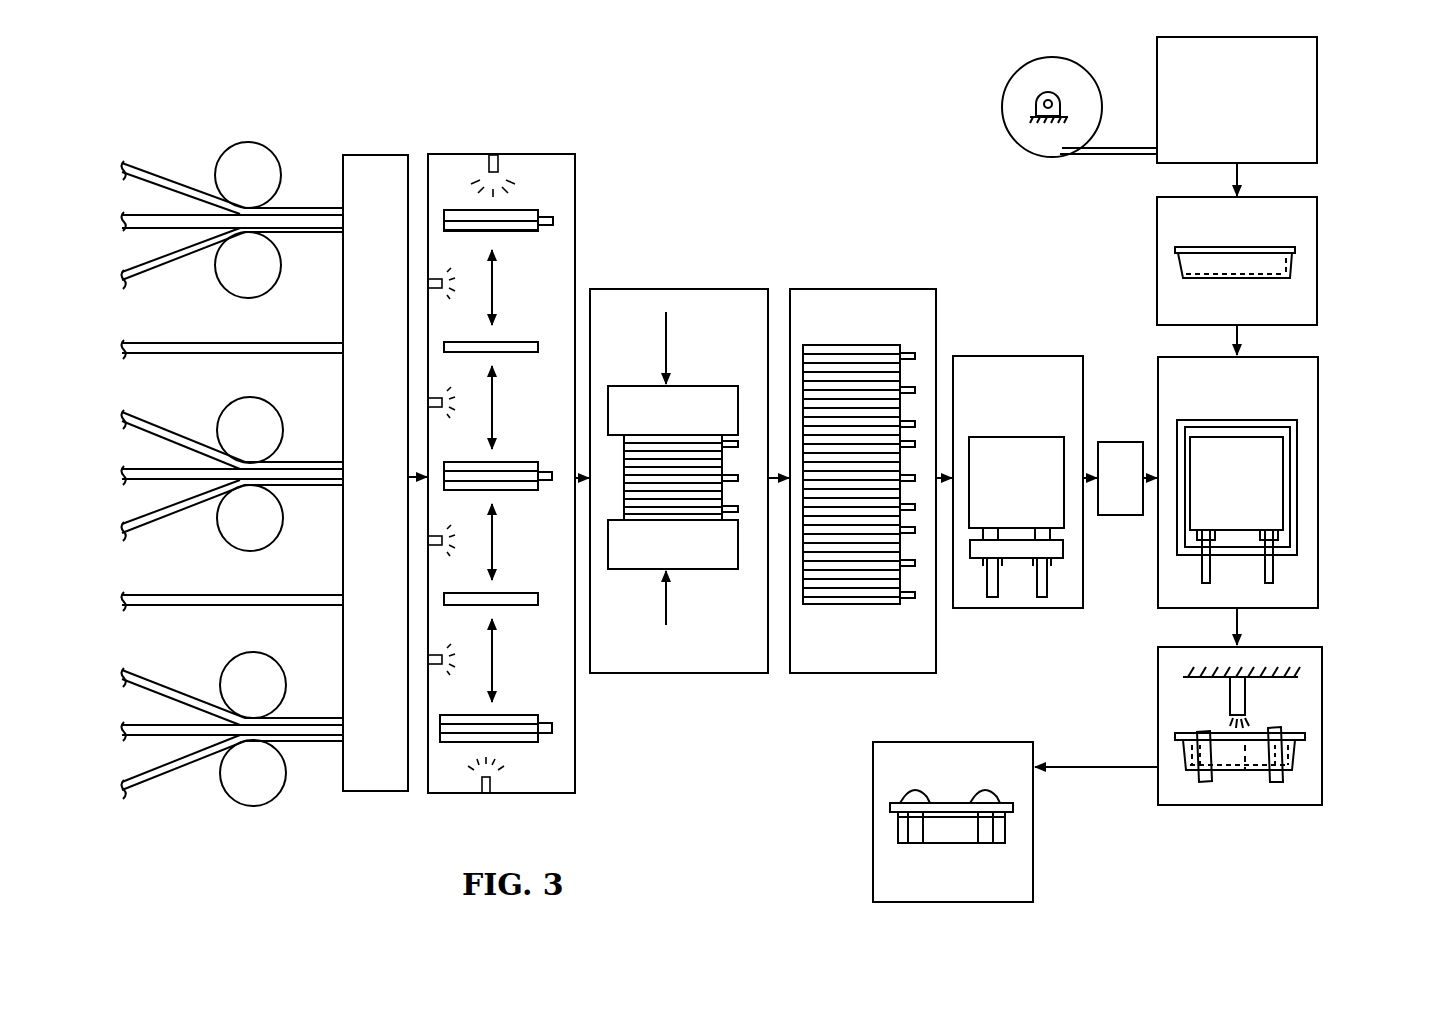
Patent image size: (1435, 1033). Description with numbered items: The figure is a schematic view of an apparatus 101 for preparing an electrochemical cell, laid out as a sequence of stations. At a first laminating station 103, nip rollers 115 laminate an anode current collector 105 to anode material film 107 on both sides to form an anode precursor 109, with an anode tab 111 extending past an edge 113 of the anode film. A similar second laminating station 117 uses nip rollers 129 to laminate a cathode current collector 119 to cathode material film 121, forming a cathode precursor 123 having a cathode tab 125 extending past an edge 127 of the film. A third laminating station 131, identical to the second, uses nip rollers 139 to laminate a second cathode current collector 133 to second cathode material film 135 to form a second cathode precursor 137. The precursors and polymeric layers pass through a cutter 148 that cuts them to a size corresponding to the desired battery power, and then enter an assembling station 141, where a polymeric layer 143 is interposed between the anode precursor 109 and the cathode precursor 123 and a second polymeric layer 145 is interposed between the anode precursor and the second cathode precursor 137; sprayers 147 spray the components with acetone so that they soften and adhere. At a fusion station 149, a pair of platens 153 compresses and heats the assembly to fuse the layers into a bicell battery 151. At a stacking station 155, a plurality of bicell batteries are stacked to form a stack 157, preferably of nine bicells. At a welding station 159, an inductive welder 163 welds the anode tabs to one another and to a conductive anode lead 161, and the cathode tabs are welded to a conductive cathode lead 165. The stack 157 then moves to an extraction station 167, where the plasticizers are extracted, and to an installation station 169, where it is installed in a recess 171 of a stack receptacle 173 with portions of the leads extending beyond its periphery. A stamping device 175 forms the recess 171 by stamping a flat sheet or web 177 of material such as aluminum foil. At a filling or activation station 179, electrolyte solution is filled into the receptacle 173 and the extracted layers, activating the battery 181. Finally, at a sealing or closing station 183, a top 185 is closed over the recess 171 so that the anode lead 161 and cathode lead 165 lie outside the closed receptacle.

The apparatus 101 is at (718, 105).
The first laminating station 103 is at (212, 408).
The anode current collector 105 is at (148, 470).
The anode material film 107 is at (147, 423).
The anode precursor 109 is at (304, 461).
The anode tab 111 is at (549, 470).
The edge of the anode film 113 is at (542, 495).
The nip rollers 115 is at (272, 418).
The second laminating station 117 is at (225, 142).
The cathode current collector 119 is at (149, 213).
The cathode material film 121 is at (162, 166).
The cathode precursor 123 is at (296, 206).
The cathode tab 125 is at (549, 226).
The edge of the cathode material film 127 is at (540, 232).
The nip rollers 129 is at (268, 152).
The third laminating station 131 is at (228, 655).
The second cathode current collector 133 is at (148, 725).
The second cathode material film 135 is at (160, 681).
The second cathode precursor 137 is at (316, 717).
The nip rollers 139 is at (276, 668).
The assembling station 141 is at (541, 150).
The polymeric layer 143 is at (168, 337).
The second polymeric layer 145 is at (172, 593).
The sprayers 147 is at (486, 170).
The cutter 148 is at (372, 152).
The fusion station 149 is at (693, 283).
The bicell battery 151 is at (701, 500).
The platens 153 is at (700, 398).
The stacking station 155 is at (856, 283).
The stack 157 is at (880, 343).
The welding station 159 is at (1011, 353).
The conductive anode lead 161 is at (992, 597).
The inductive welder 163 is at (1025, 558).
The conductive cathode lead 165 is at (1043, 597).
The extraction station 167 is at (1118, 440).
The installation station 169 is at (1320, 479).
The recess 171 is at (1297, 255).
The stack receptacle 173 is at (1286, 244).
The stamping device 175 is at (1320, 120).
The flat sheet or web 177 is at (1117, 147).
The filling or activation station 179 is at (1326, 690).
The battery 181 is at (1306, 755).
The sealing or closing station 183 is at (1037, 873).
The top 185 is at (935, 800).